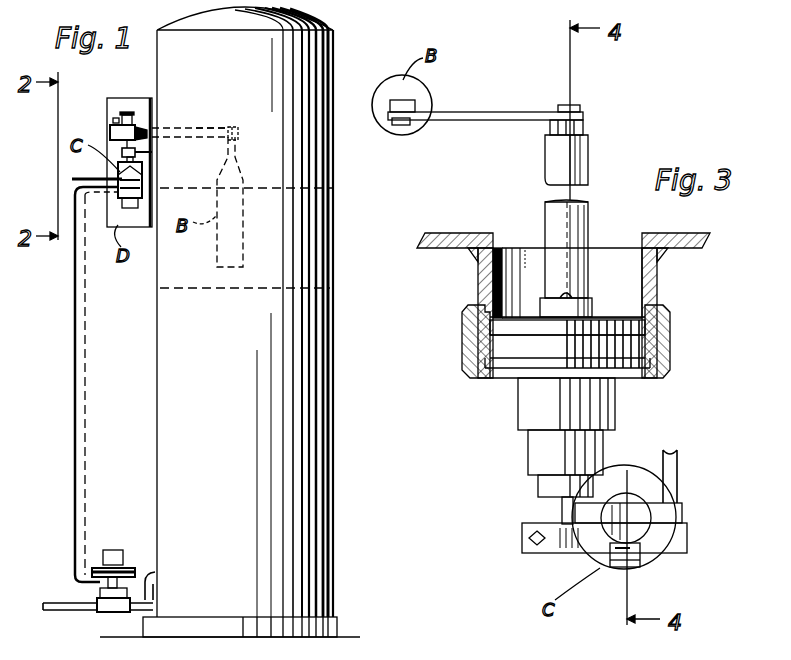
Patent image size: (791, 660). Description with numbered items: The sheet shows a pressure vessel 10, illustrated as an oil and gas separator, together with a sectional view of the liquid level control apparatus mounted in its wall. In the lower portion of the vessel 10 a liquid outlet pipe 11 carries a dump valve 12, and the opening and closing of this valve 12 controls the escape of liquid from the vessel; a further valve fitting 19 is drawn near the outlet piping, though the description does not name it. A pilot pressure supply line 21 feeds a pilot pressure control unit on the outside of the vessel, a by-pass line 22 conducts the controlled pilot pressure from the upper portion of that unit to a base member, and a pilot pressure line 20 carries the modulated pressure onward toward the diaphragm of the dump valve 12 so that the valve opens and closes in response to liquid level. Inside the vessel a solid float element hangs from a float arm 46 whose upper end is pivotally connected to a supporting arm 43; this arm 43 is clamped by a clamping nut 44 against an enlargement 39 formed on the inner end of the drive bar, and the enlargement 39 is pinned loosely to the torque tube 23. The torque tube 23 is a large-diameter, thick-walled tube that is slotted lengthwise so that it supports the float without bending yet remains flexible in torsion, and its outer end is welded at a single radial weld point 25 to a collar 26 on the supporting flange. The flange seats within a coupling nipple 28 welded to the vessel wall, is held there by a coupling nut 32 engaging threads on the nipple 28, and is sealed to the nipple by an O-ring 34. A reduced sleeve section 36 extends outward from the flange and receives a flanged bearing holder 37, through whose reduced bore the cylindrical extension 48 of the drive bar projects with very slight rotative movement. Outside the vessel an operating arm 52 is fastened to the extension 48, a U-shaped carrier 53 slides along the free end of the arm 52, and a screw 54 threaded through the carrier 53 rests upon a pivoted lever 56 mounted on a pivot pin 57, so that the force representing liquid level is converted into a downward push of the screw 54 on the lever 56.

In FIG. 1, the pressure vessel 10 is at (156, 82).
In FIG. 3, the pressure vessel 10 is at (440, 236).
In FIG. 1, the liquid outlet pipe 11 is at (155, 572).
In FIG. 1, the dump valve 12 is at (105, 613).
In FIG. 1, the inlet valve 19 is at (118, 540).
In FIG. 1, the pilot pressure line 20 is at (75, 270).
In FIG. 1, the pilot pressure supply line 21 is at (88, 180).
In FIG. 1, the by-pass line 22 is at (143, 184).
In FIG. 1, the torque tube 23 is at (214, 116).
In FIG. 3, the torque tube 23 is at (589, 226).
In FIG. 3, the weld point 25 is at (575, 296).
In FIG. 3, the collar 26 is at (593, 310).
In FIG. 3, the coupling nipple 28 is at (478, 284).
In FIG. 3, the coupling nut 32 is at (468, 350).
In FIG. 3, the O-ring 34 is at (490, 326).
In FIG. 3, the sleeve section 36 is at (525, 405).
In FIG. 3, the bearing holder 37 is at (538, 485).
In FIG. 3, the enlargement 39 is at (590, 136).
In FIG. 3, the supporting arm 43 is at (508, 112).
In FIG. 3, the clamping nut 44 is at (575, 105).
In FIG. 3, the float arm 46 is at (405, 100).
In FIG. 3, the cylindrical extension 48 is at (560, 507).
In FIG. 1, the operating arm 52 is at (118, 133).
In FIG. 3, the operating arm 52 is at (560, 553).
In FIG. 1, the U-shaped carrier 53 is at (115, 118).
In FIG. 3, the U-shaped carrier 53 is at (635, 565).
In FIG. 3, the screw 54 is at (620, 568).
In FIG. 1, the pivoted lever 56 is at (147, 163).
In FIG. 3, the pivoted lever 56 is at (683, 515).
In FIG. 3, the pivot pin 57 is at (678, 472).